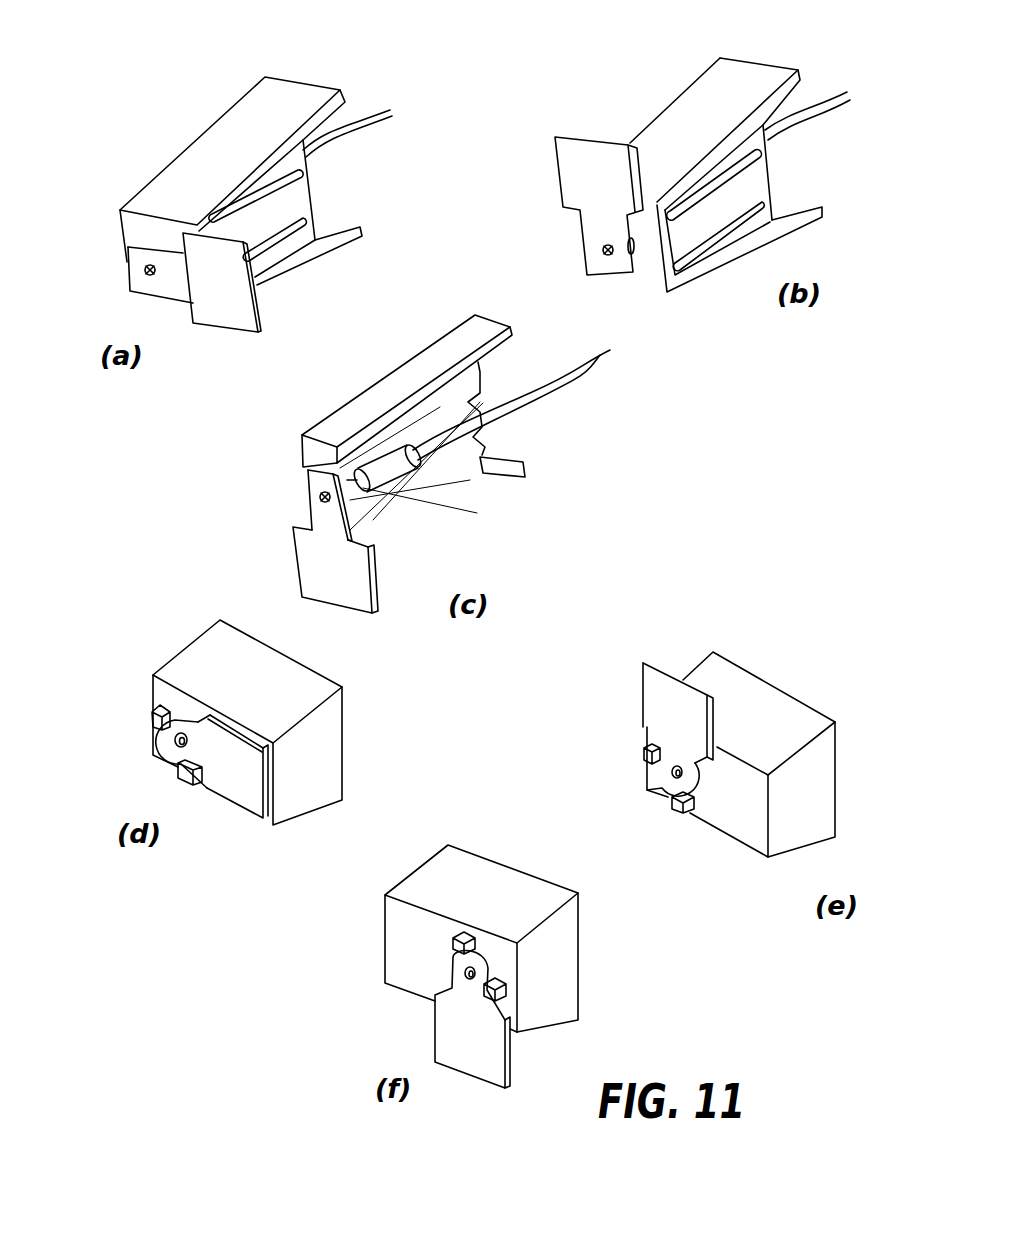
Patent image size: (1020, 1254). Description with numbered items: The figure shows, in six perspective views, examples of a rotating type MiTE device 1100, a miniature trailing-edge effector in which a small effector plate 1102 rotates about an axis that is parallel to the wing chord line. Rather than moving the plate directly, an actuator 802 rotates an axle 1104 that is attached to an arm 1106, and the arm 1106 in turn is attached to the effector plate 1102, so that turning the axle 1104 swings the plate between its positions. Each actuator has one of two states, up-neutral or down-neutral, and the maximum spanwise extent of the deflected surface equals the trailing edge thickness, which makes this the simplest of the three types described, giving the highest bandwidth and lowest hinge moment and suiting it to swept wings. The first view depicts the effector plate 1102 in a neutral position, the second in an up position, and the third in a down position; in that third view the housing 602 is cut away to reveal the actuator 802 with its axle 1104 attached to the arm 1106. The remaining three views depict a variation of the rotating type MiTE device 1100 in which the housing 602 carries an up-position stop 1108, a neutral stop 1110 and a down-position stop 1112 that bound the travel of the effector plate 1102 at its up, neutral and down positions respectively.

The rotating type MiTE device 1100 is at (172, 82).
The housing 602 is at (303, 82).
The actuator 802 is at (440, 472).
The effector plate 1102 is at (258, 320).
The axle 1104 is at (145, 270).
The arm 1106 is at (138, 247).
The up-position stop 1108 is at (152, 712).
The neutral stop 1110 is at (193, 784).
The down-position stop 1112 is at (508, 993).